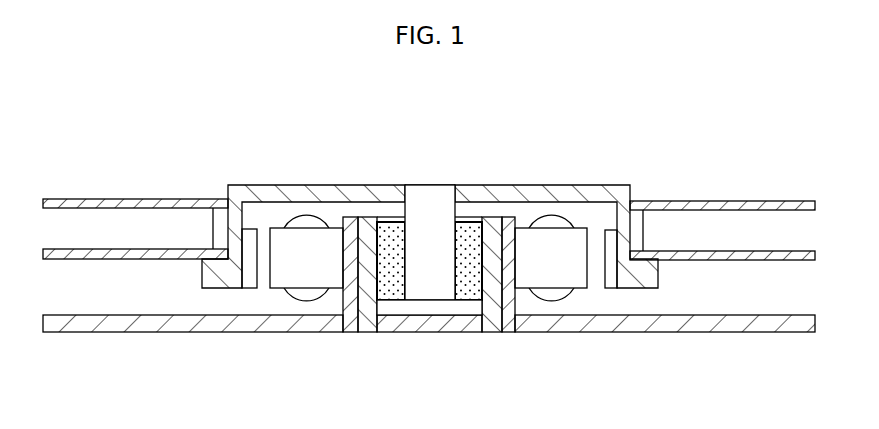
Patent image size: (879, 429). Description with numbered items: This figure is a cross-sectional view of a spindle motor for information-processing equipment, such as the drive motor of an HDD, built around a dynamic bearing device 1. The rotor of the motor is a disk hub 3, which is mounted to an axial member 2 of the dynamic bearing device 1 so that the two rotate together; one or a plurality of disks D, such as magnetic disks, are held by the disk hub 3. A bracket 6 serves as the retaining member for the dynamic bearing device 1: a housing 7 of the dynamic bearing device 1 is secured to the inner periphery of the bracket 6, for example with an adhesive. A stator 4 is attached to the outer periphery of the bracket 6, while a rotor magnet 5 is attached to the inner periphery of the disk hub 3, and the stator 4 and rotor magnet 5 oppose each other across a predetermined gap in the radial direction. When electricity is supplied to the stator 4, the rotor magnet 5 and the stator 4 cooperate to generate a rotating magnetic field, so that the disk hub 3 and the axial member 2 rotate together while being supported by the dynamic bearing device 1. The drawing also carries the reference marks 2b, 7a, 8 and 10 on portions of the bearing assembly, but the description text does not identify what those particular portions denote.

The dynamic bearing device 1 is at (463, 248).
The axial member 2 is at (431, 248).
The flange of movable shaft 2b is at (405, 312).
The disk hub 3 is at (612, 192).
The stator 4 is at (578, 277).
The rotor magnet 5 is at (607, 288).
The bracket 6 is at (518, 328).
The housing 7 is at (376, 226).
The yoke portion 7a is at (387, 220).
The permanent magnet 8 is at (468, 232).
The base plate 10 is at (453, 323).
The disk D is at (740, 201).